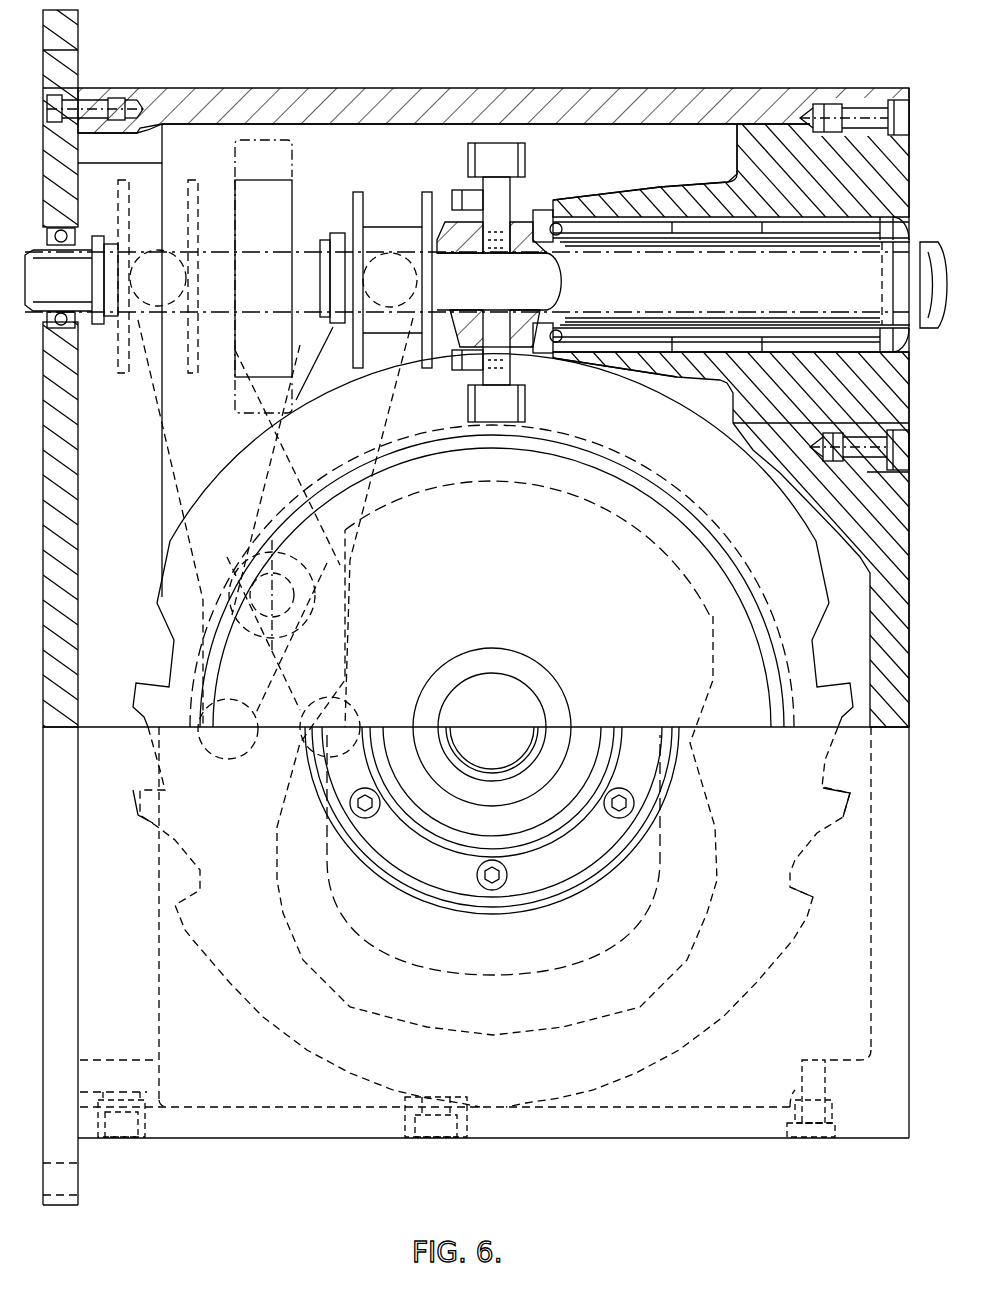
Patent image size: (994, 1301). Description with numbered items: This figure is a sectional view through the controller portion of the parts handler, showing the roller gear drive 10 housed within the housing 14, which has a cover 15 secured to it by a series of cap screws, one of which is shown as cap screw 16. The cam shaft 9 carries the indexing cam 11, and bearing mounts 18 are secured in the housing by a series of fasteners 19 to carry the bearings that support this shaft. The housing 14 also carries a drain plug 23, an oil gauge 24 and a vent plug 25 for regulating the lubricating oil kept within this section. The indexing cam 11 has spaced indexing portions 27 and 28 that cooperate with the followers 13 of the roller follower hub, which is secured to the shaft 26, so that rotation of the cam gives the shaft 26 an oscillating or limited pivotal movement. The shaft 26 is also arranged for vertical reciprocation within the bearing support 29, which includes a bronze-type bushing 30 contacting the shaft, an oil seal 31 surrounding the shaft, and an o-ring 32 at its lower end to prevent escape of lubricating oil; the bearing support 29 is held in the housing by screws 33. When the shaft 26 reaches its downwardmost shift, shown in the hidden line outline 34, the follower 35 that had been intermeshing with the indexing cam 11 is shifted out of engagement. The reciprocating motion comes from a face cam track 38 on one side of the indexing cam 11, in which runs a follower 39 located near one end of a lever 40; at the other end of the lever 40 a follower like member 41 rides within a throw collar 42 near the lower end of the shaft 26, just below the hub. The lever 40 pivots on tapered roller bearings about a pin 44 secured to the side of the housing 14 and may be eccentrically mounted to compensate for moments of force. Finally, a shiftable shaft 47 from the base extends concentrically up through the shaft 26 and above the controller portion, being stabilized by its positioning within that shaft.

The cam shaft 9 is at (521, 757).
The roller gear drive 10 is at (264, 1042).
The indexing cam 11 is at (230, 983).
The followers 13 is at (486, 143).
The housing 14 is at (228, 95).
The cover 15 is at (46, 462).
The cap screw 16 is at (92, 100).
The bearing mounts 18 is at (537, 820).
The fasteners 19 is at (500, 885).
The drain plug 23 is at (122, 1140).
The oil gauge 24 is at (443, 1140).
The vent plug 25 is at (815, 1140).
The shaft 26 is at (693, 330).
The indexing portion 27 is at (142, 790).
The indexing portion 28 is at (820, 835).
The bearing support 29 is at (902, 190).
The bushing 30 is at (713, 222).
The oil seal 31 is at (903, 343).
The o-ring 32 is at (623, 377).
The screws 33 is at (902, 118).
The hidden line outline 34 is at (295, 186).
The follower 35 is at (527, 400).
The face cam track 38 is at (280, 838).
The follower 39 is at (349, 714).
The lever 40 is at (172, 462).
The follower like member 41 is at (166, 250).
The throw collar 42 is at (130, 210).
The pin 44 is at (386, 253).
The shiftable shaft 47 is at (44, 312).